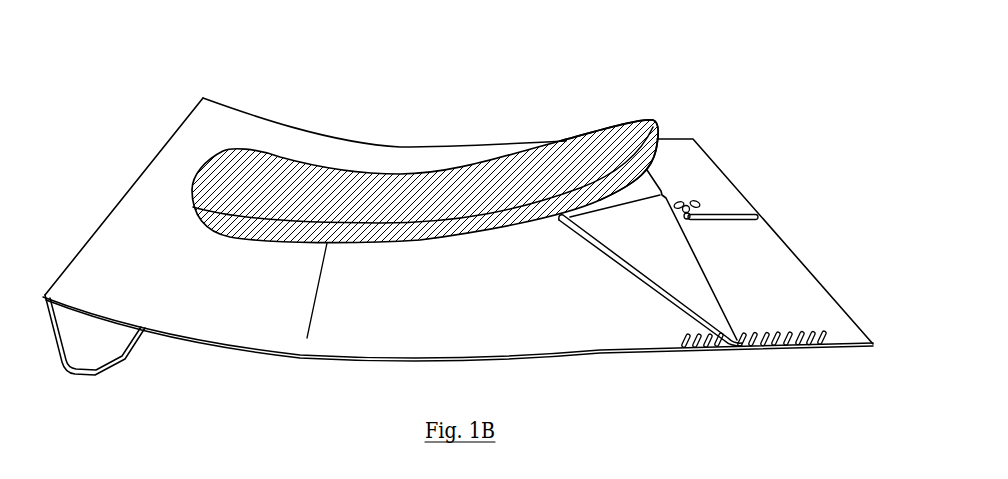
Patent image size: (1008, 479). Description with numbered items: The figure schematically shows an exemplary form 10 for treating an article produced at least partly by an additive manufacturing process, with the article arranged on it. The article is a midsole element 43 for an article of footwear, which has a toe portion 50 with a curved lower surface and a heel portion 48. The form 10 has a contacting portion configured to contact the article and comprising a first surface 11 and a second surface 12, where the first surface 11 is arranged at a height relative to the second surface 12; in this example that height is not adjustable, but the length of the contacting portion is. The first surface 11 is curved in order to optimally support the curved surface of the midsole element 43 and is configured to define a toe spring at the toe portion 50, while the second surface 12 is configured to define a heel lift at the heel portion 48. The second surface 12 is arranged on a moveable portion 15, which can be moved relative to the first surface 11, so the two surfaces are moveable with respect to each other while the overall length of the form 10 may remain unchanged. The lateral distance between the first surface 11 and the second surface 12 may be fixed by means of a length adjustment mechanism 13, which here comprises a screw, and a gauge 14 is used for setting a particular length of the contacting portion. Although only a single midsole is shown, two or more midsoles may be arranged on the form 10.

The form 10 is at (166, 83).
The first surface 11 is at (187, 160).
The second surface 12 is at (660, 253).
The length adjustment mechanism 13 is at (690, 202).
The gauge 14 is at (818, 336).
The moveable portion 15 is at (650, 273).
The midsole element 43 is at (403, 200).
The heel portion 48 is at (595, 162).
The toe portion 50 is at (275, 190).